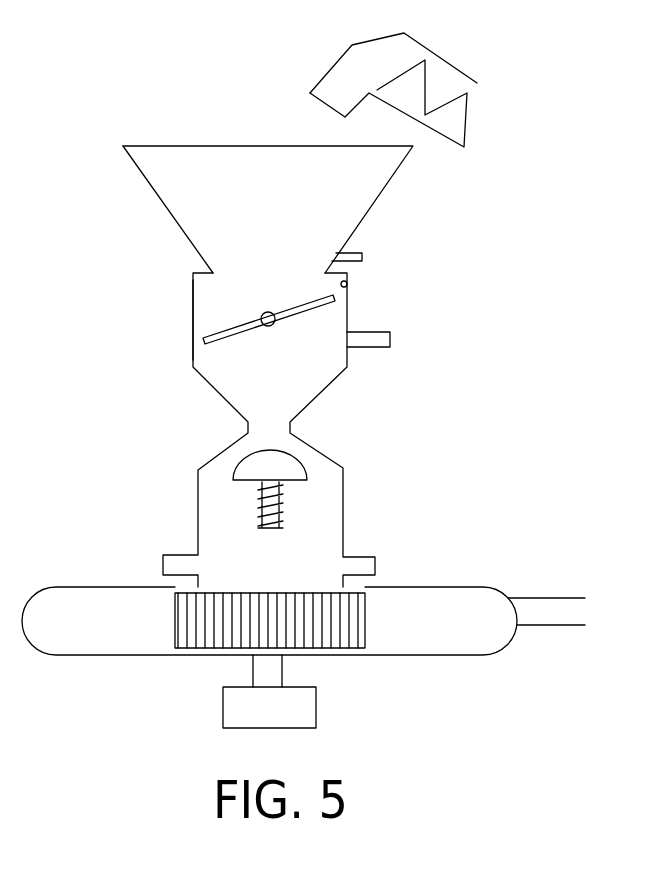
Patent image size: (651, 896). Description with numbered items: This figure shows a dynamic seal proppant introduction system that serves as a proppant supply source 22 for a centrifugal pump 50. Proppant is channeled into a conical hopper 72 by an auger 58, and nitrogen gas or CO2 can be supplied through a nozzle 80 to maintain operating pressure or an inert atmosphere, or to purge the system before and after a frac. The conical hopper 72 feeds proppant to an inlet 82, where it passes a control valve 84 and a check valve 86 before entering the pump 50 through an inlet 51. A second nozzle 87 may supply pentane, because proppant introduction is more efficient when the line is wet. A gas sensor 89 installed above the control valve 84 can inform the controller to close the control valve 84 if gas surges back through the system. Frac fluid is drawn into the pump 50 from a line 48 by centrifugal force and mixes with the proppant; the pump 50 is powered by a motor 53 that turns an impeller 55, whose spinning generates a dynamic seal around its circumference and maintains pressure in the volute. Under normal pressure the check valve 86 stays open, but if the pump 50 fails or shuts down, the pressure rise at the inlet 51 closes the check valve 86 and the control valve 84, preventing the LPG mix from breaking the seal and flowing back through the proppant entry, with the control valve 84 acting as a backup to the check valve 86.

The proppant supply source 22 is at (180, 90).
The auger 58 is at (467, 110).
The conical hopper 72 is at (152, 193).
The nozzle 80 is at (362, 258).
The inlet 82 is at (192, 287).
The control valve 84 is at (228, 331).
The gas sensor 89 is at (347, 286).
The nozzle 87 is at (377, 347).
The check valve 86 is at (240, 462).
The inlet 51 is at (233, 580).
The impeller 55 is at (343, 637).
The pump 50 is at (133, 655).
The line 48 is at (537, 597).
The motor 53 is at (317, 720).